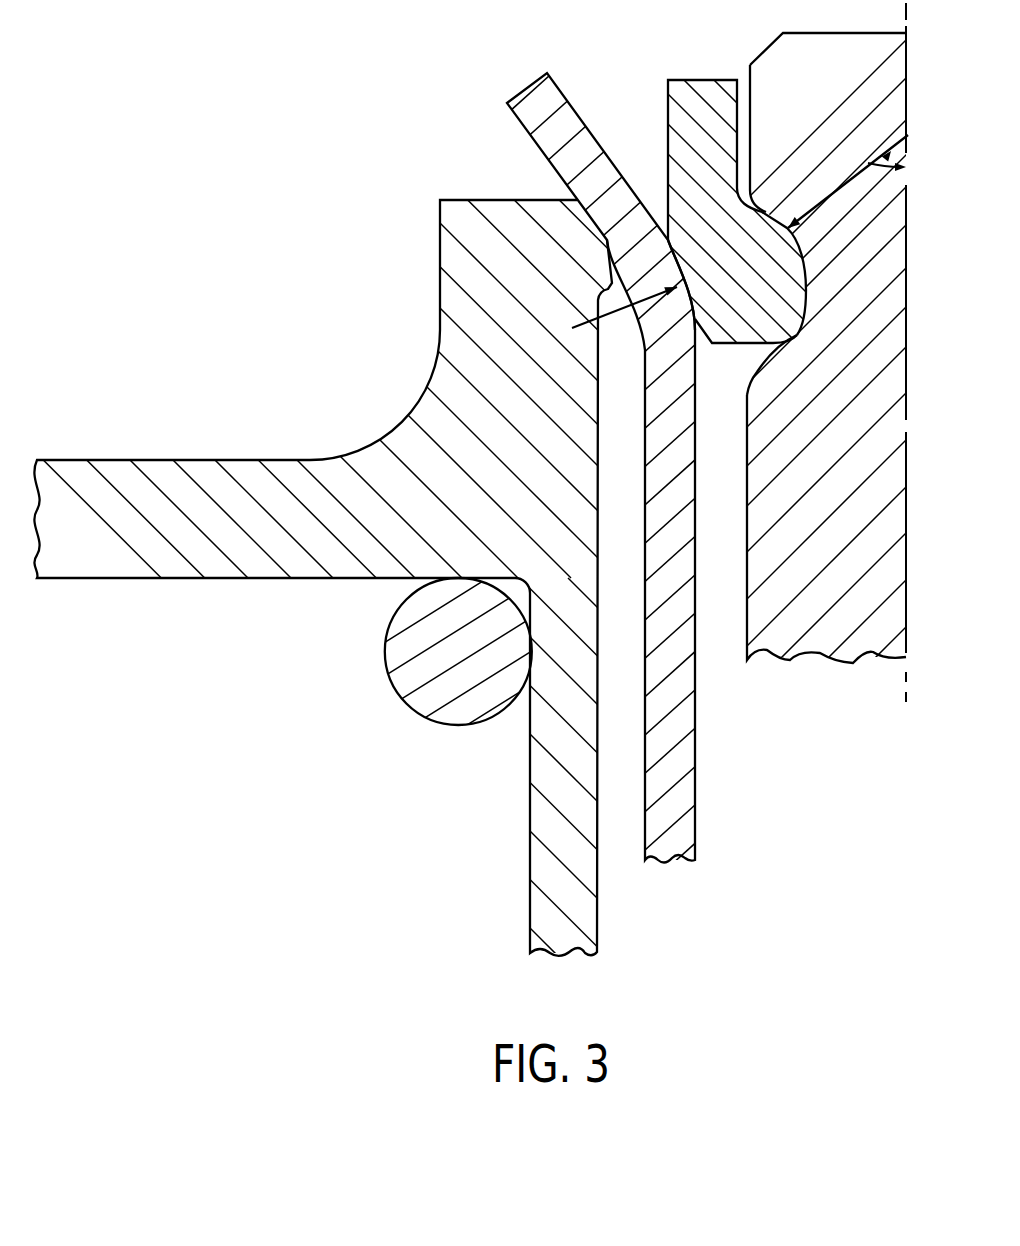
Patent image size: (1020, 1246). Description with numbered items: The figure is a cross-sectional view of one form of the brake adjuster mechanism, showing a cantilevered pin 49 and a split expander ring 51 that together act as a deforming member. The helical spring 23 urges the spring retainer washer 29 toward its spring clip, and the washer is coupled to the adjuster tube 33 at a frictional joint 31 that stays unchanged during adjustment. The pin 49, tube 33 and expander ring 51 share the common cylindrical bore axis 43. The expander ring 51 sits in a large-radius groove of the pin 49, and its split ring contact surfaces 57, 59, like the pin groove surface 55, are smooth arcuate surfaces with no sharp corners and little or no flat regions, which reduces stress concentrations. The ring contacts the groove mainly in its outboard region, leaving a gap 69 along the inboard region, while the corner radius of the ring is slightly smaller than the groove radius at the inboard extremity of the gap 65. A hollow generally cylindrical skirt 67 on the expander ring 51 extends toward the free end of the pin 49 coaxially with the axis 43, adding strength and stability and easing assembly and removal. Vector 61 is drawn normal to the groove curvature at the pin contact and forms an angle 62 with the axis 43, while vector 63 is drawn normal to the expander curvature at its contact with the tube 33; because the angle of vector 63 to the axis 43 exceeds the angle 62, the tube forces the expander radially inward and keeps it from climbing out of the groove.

The helical spring 23 is at (428, 687).
The spring retainer washer 29 is at (430, 413).
The frictional joint 31 is at (593, 217).
The adjuster tube 33 is at (530, 116).
The cylindrical bore axis 43 is at (903, 670).
The cantilevered pin 49 is at (855, 399).
The split expander ring 51 is at (770, 258).
The pin groove surface 55 is at (797, 341).
The split ring contact surface 57 is at (806, 287).
The split ring contact surface 59 is at (675, 268).
The expander/pin normal vector 61 is at (838, 188).
The angle of intersection 62 is at (868, 163).
The tube/expander normal vector 63 is at (579, 323).
The gap 65 is at (743, 93).
The cylindrical skirt 67 is at (677, 93).
The gap 69 is at (777, 345).